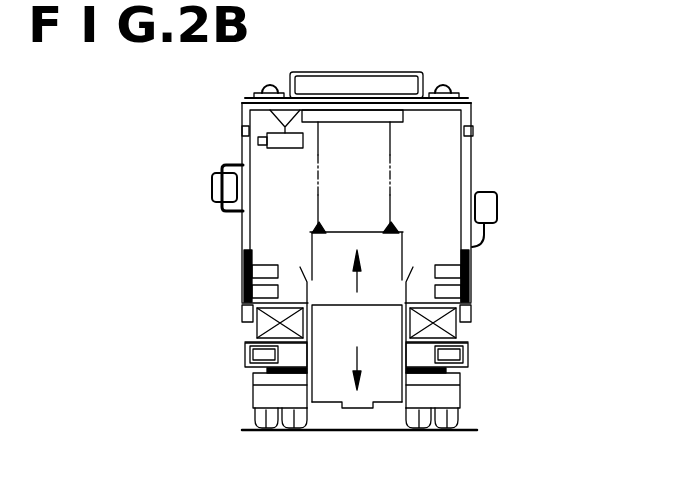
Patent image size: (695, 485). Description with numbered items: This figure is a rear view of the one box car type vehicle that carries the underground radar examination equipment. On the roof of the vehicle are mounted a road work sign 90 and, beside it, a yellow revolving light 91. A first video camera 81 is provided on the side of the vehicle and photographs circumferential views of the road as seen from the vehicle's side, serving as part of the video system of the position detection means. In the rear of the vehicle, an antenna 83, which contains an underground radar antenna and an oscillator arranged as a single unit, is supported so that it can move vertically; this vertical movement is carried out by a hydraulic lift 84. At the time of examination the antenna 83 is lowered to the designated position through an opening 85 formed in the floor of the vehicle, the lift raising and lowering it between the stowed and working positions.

The road work sign 90 is at (320, 83).
The yellow revolving light 91 is at (258, 87).
The first video camera 81 is at (282, 138).
The hydraulic lift 84 is at (320, 193).
The antenna 83 is at (328, 380).
The opening 85 is at (402, 407).